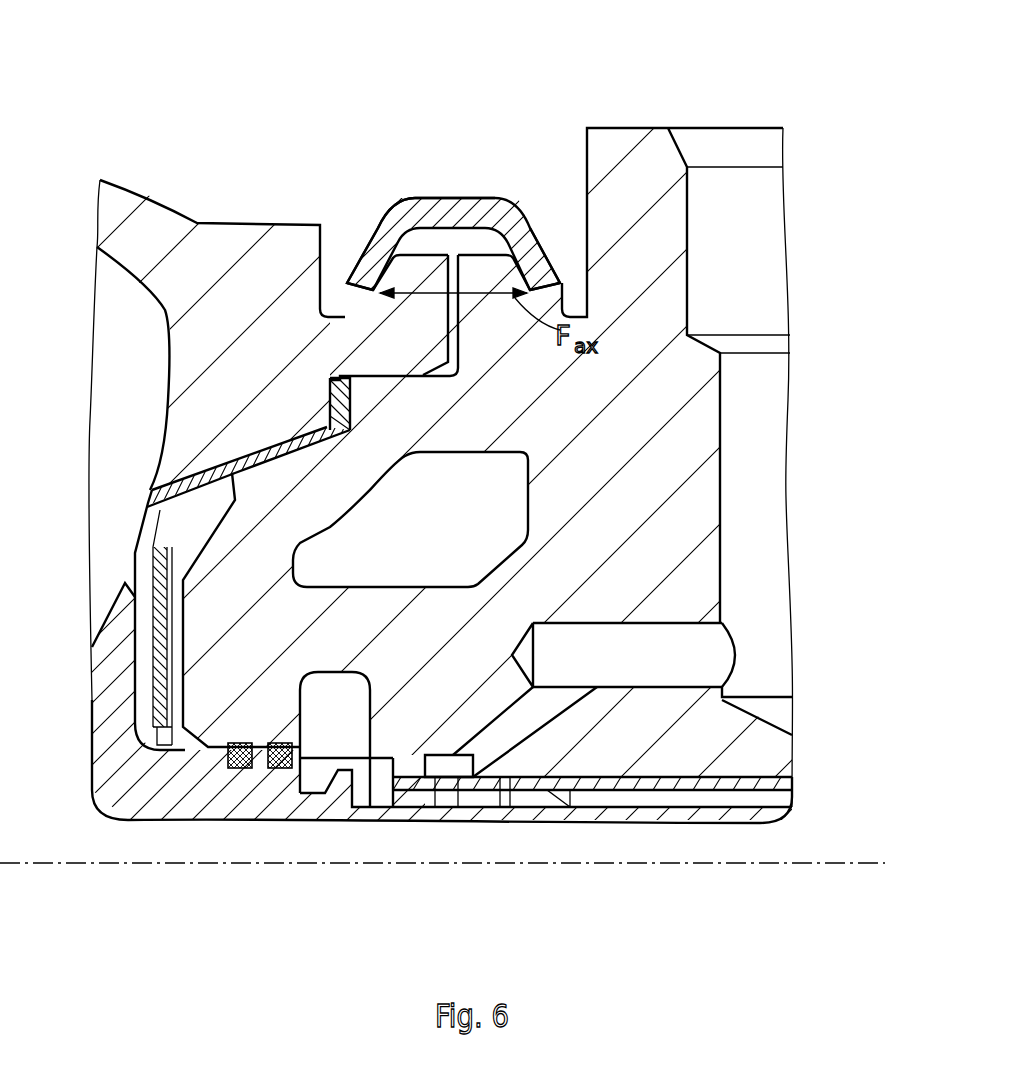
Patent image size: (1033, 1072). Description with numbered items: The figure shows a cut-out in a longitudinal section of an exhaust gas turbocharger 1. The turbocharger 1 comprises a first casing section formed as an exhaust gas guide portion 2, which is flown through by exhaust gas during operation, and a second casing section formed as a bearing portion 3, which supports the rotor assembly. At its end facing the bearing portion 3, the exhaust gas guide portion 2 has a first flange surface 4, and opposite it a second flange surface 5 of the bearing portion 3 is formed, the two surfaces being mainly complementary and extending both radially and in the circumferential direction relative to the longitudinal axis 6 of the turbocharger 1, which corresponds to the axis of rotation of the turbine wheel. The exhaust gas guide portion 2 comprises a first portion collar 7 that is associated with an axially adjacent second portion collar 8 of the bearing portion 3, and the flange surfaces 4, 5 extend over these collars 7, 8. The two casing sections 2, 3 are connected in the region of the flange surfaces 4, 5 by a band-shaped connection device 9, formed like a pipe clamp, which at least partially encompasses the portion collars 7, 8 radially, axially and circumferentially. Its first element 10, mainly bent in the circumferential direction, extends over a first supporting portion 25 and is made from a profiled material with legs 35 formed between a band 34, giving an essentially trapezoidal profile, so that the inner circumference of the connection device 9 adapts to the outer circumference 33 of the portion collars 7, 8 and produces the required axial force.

The exhaust gas turbocharger 1 is at (820, 177).
The exhaust gas guide portion 2 is at (240, 222).
The bearing portion 3 is at (636, 124).
The first flange surface 4 is at (455, 333).
The second flange surface 5 is at (450, 322).
The longitudinal axis 6 is at (858, 862).
The first portion collar 7 is at (408, 270).
The second portion collar 8 is at (492, 250).
The connection device 9 is at (400, 128).
The first element 10 is at (452, 195).
The first supporting portion 25 is at (403, 205).
The outer circumference 33 is at (413, 272).
The band 34 is at (477, 262).
The legs 35 is at (355, 275).